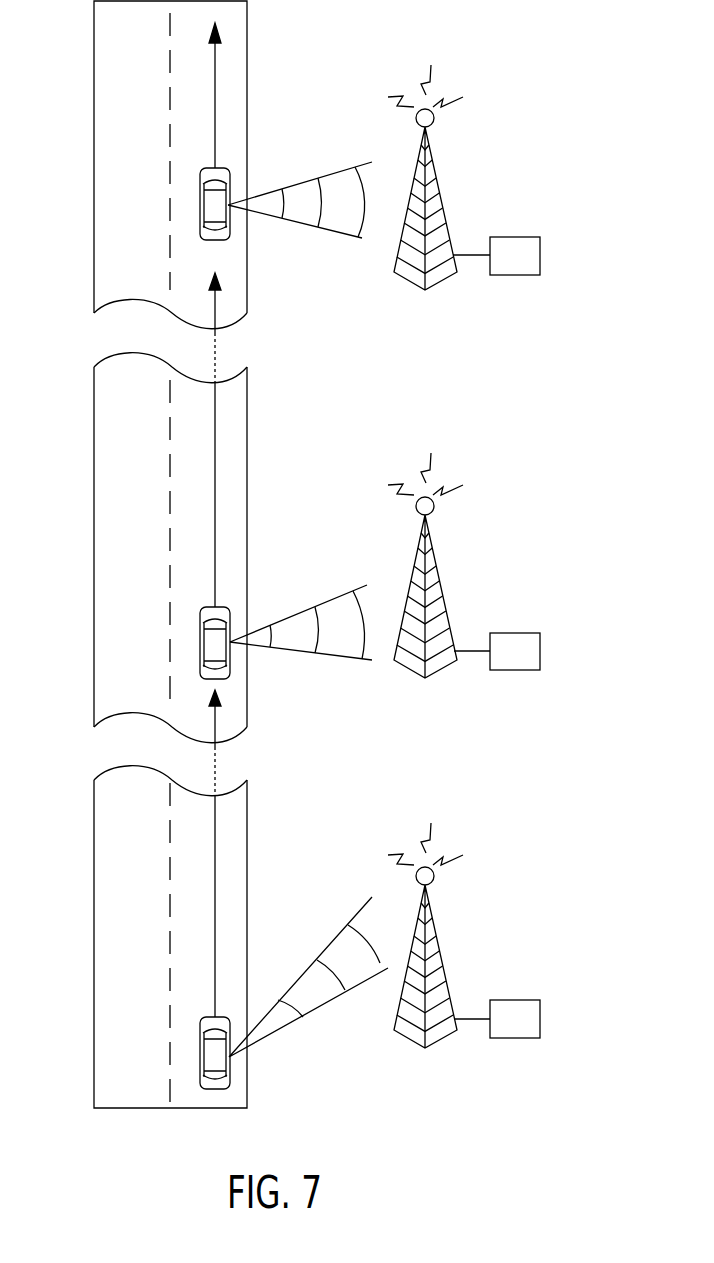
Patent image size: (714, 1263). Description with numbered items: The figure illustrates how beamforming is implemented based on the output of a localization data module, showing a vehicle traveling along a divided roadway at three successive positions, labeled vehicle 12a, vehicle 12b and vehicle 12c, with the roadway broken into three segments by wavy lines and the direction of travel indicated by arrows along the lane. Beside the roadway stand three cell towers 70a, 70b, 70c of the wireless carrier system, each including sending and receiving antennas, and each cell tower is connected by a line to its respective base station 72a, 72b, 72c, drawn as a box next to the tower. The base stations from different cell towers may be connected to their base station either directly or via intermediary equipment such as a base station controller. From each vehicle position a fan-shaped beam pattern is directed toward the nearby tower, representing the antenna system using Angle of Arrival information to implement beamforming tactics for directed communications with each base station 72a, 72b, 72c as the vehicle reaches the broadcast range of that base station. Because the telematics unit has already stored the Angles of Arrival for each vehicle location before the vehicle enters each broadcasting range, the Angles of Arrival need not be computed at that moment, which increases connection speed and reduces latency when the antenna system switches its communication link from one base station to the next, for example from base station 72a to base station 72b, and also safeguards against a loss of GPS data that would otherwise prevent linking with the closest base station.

The vehicle 12a is at (215, 1048).
The vehicle 12b is at (210, 643).
The vehicle 12c is at (210, 205).
The cell tower 70a is at (448, 935).
The cell tower 70b is at (448, 565).
The cell tower 70c is at (461, 161).
The base station 72a is at (540, 1019).
The base station 72b is at (540, 651).
The base station 72c is at (540, 256).